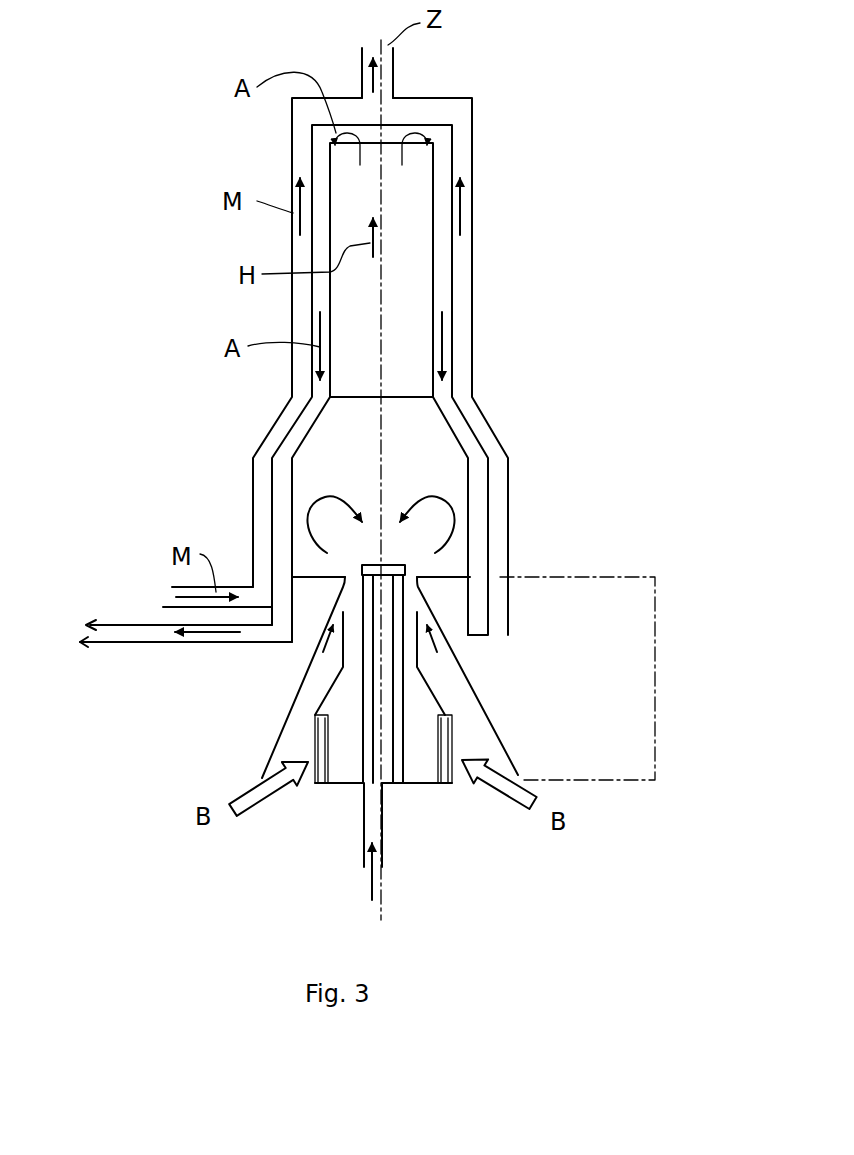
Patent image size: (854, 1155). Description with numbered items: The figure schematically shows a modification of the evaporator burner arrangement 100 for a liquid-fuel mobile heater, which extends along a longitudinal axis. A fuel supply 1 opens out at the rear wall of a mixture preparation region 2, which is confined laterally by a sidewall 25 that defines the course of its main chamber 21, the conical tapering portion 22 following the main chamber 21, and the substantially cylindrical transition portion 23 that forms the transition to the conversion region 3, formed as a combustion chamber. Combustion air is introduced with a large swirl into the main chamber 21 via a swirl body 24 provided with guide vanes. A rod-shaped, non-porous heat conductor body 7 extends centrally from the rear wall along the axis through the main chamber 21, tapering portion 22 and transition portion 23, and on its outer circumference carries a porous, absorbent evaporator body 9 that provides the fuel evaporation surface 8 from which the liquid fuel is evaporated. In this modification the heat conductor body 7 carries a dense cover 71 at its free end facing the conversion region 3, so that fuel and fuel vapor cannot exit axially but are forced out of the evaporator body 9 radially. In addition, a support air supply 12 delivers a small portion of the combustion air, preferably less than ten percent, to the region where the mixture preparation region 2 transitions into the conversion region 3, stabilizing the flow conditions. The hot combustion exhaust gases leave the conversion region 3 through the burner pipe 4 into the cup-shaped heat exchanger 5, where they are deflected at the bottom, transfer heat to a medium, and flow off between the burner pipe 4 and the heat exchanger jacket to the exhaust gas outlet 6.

The evaporator burner arrangement 100 is at (604, 156).
The heat exchanger 5 is at (453, 150).
The burner pipe 4 is at (415, 285).
The conversion region 3 is at (443, 482).
The cover 71 is at (413, 575).
The exhaust gas outlet 6 is at (118, 630).
The support air supply 12 is at (333, 627).
The evaporator body 9 is at (345, 667).
The fuel evaporation surface 8 is at (363, 715).
The heat conductor body 7 is at (370, 768).
The fuel supply 1 is at (372, 896).
The swirl body 24 is at (437, 769).
The sidewall 25 is at (438, 690).
The main chamber 21 is at (430, 745).
The tapering portion 22 is at (423, 687).
The transition portion 23 is at (417, 657).
The mixture preparation region 2 is at (655, 686).